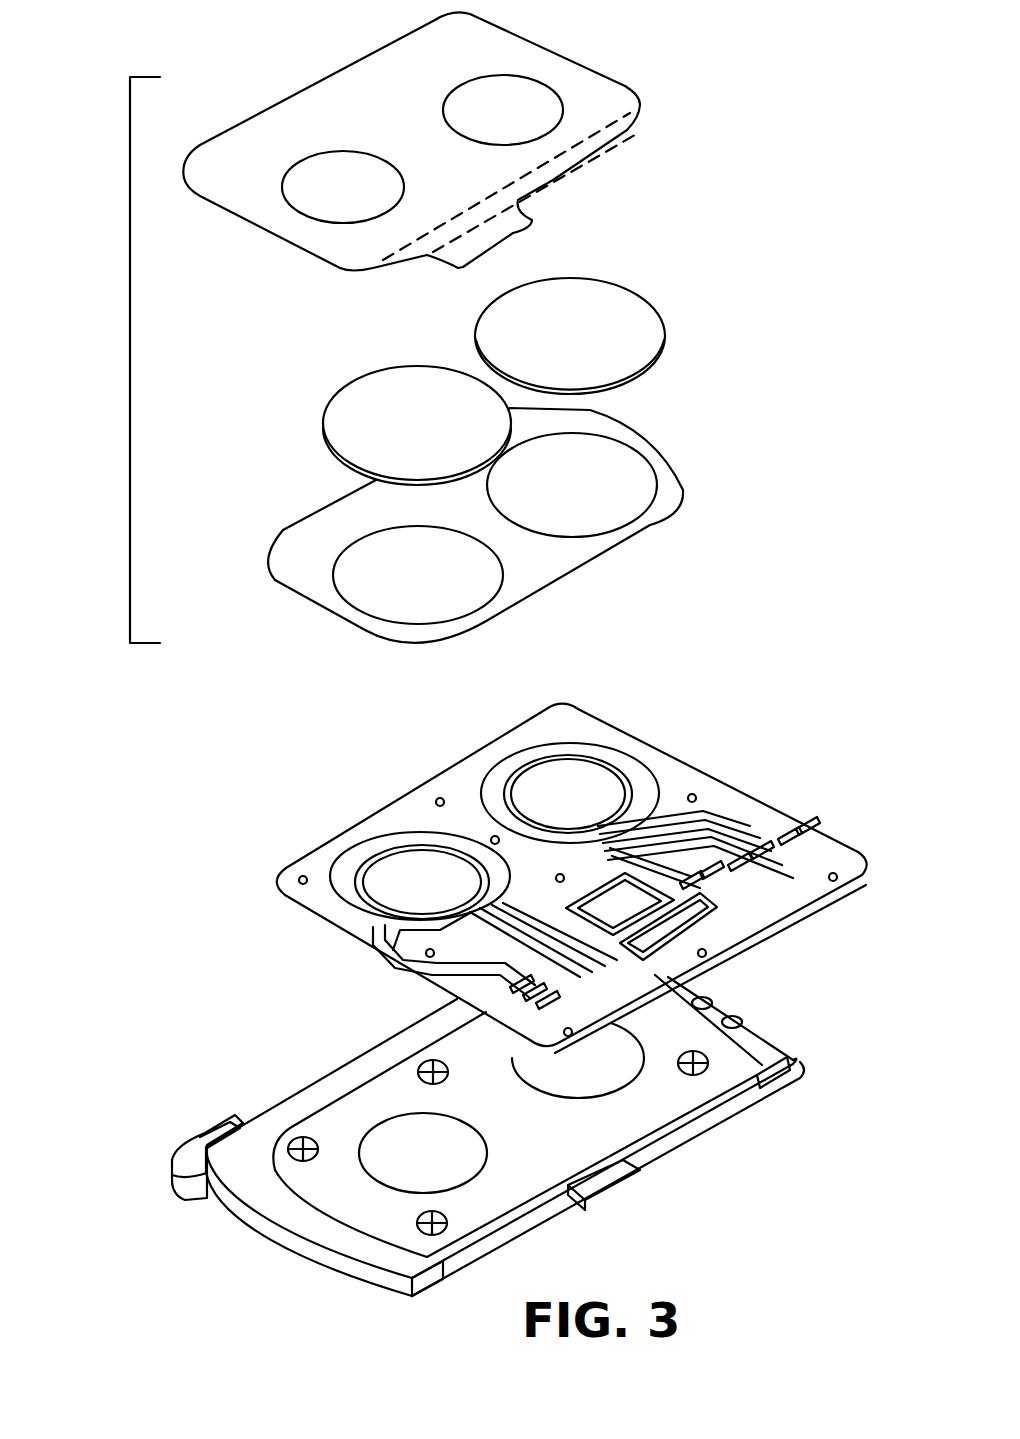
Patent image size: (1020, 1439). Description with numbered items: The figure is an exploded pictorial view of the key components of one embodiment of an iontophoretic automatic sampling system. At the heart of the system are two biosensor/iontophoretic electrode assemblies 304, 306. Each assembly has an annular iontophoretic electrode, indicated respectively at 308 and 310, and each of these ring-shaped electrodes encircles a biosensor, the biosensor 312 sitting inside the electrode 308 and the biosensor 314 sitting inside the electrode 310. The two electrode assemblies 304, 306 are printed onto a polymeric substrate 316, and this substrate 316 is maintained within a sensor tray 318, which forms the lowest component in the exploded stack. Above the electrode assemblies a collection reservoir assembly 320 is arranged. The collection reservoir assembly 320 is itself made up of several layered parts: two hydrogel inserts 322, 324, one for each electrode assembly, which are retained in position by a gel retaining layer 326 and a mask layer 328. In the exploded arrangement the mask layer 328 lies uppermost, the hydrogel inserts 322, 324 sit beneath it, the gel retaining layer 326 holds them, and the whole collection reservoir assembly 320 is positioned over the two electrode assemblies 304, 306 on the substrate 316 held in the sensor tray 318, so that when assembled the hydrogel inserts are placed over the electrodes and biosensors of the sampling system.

The biosensor/iontophoretic electrode assembly 304 is at (583, 735).
The biosensor/iontophoretic electrode assembly 306 is at (370, 818).
The annular iontophoretic electrode 308 is at (627, 762).
The annular iontophoretic electrode 310 is at (345, 895).
The biosensor 312 is at (537, 788).
The biosensor 314 is at (390, 895).
The polymeric substrate 316 is at (806, 920).
The sensor tray 318 is at (670, 1156).
The collection reservoir assembly 320 is at (128, 378).
The hydrogel insert 322 is at (385, 400).
The hydrogel insert 324 is at (571, 305).
The gel retaining layer 326 is at (695, 467).
The mask layer 328 is at (353, 88).